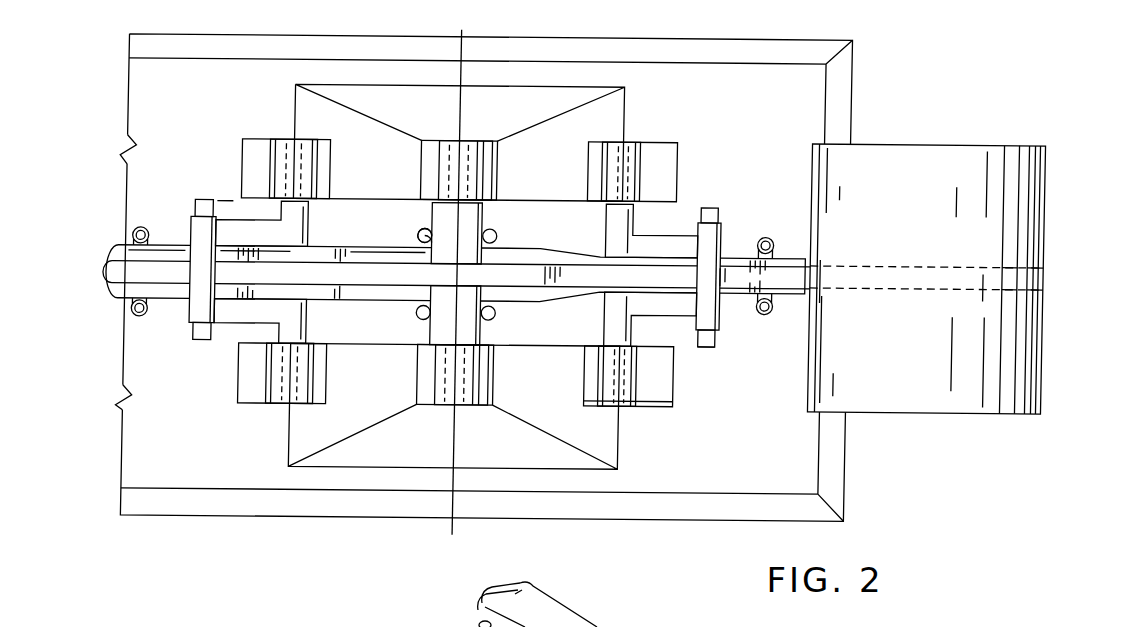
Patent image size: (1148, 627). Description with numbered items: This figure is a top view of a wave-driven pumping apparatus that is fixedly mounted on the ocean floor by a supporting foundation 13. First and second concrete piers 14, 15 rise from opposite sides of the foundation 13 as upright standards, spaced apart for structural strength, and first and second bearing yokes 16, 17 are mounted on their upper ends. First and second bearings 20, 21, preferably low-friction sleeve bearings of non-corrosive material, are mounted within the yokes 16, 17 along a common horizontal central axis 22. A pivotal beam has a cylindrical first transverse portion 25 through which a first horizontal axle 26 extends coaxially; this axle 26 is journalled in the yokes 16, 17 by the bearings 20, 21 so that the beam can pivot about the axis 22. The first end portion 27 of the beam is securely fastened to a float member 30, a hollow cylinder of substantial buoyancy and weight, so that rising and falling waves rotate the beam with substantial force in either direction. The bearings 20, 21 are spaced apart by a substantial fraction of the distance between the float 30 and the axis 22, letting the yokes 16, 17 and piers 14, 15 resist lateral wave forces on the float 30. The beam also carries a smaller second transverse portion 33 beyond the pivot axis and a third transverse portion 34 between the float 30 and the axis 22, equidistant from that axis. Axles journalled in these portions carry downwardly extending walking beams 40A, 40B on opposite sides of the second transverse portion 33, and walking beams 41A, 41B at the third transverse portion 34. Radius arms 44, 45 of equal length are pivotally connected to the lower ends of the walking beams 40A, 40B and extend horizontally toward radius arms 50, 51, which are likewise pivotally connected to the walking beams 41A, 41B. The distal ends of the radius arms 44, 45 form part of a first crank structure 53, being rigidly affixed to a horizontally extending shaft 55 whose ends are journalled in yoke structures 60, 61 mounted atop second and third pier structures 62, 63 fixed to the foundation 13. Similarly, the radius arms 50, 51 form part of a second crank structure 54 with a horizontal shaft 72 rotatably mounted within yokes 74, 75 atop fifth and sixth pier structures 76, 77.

The supporting foundation 13 is at (770, 79).
The first concrete pier 14 is at (415, 456).
The second concrete pier 15 is at (463, 107).
The first bearing yoke 16 is at (434, 381).
The second bearing yoke 17 is at (434, 158).
The first bearing 20 is at (466, 406).
The second bearing 21 is at (467, 144).
The central axis 22 is at (455, 67).
The first transverse portion 25 is at (481, 213).
The first horizontal axle 26 is at (461, 372).
The first end portion 27 is at (922, 275).
The float member 30 is at (962, 151).
The second transverse portion 33 is at (189, 320).
The third transverse portion 34 is at (717, 242).
The first walking beam 40A is at (199, 351).
The second walking beam 40B is at (195, 205).
The first walking beam 41A is at (717, 340).
The second walking beam 41B is at (711, 204).
The radius arm 44 is at (231, 337).
The radius arm 45 is at (245, 212).
The radius arm 50 is at (683, 336).
The radius arm 51 is at (678, 208).
The first crank structure 53 is at (226, 207).
The second crank structure 54 is at (717, 350).
The horizontally extending shaft 55 is at (288, 410).
The yoke structure 60 is at (265, 401).
The yoke structure 61 is at (277, 147).
The second pier structure 62 is at (245, 383).
The third pier structure 63 is at (260, 140).
The horizontal shaft 72 is at (630, 411).
The yoke 74 is at (602, 381).
The yoke 75 is at (601, 166).
The fifth pier structure 76 is at (660, 411).
The sixth pier structure 77 is at (654, 139).